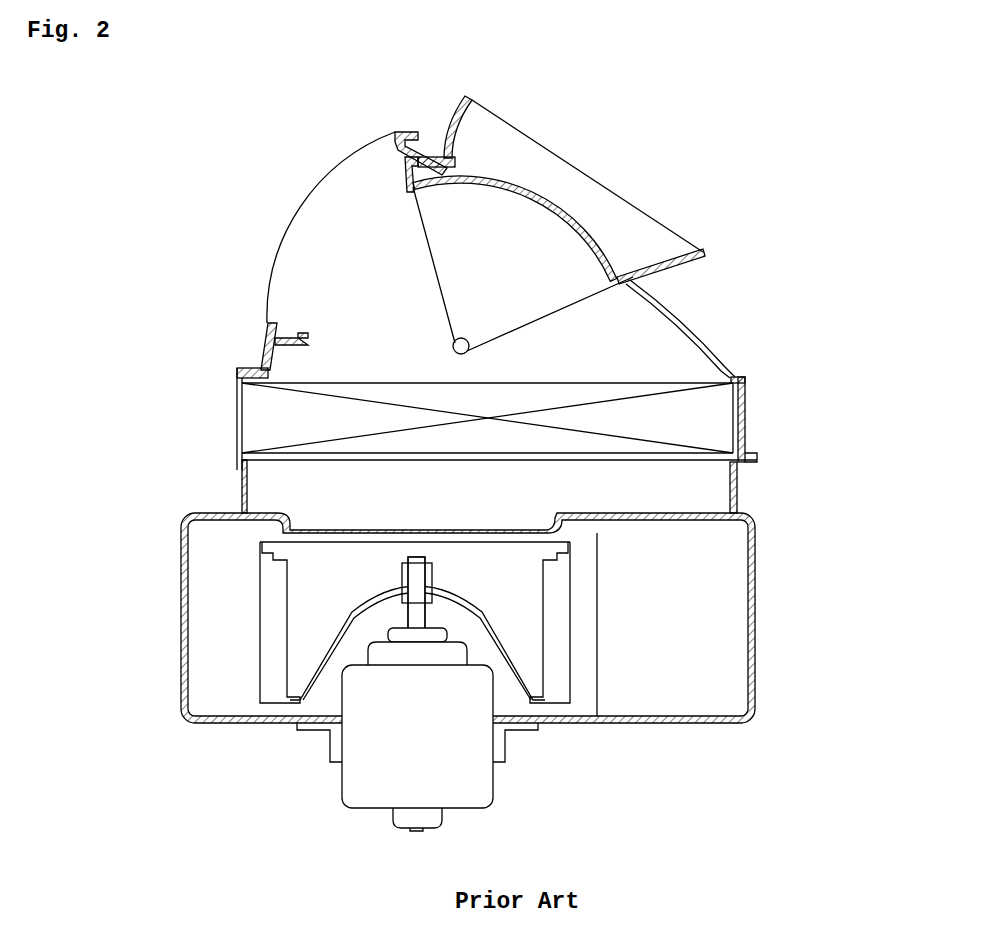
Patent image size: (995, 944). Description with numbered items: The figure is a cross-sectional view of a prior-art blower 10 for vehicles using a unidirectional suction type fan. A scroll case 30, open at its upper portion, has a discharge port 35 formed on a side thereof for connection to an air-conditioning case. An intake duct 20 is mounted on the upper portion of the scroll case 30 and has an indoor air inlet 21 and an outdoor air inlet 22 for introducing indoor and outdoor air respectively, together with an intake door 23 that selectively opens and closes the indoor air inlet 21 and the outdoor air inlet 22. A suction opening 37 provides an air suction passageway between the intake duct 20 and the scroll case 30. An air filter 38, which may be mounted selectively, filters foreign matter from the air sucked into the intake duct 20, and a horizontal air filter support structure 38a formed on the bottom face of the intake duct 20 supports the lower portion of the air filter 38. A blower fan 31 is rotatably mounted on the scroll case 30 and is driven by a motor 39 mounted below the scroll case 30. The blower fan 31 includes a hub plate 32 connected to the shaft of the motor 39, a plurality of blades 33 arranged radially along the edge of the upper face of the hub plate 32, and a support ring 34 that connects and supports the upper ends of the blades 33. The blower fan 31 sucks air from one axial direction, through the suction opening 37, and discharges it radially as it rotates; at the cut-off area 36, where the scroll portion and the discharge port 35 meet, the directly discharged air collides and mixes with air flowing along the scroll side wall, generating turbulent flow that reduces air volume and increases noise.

The blower 10 is at (178, 301).
The intake duct 20 is at (745, 360).
The indoor air inlet 21 is at (302, 208).
The outdoor air inlet 22 is at (590, 175).
The intake door 23 is at (398, 255).
The scroll case 30 is at (770, 582).
The blower fan 31 is at (246, 664).
The hub plate 32 is at (327, 663).
The blades 33 is at (275, 585).
The support ring 34 is at (260, 550).
The discharge port 35 is at (700, 630).
The cut-off area 36 is at (597, 665).
The suction opening 37 is at (310, 523).
The air filter 38 is at (263, 418).
The air filter support structure 38a is at (738, 467).
The motor 39 is at (460, 788).